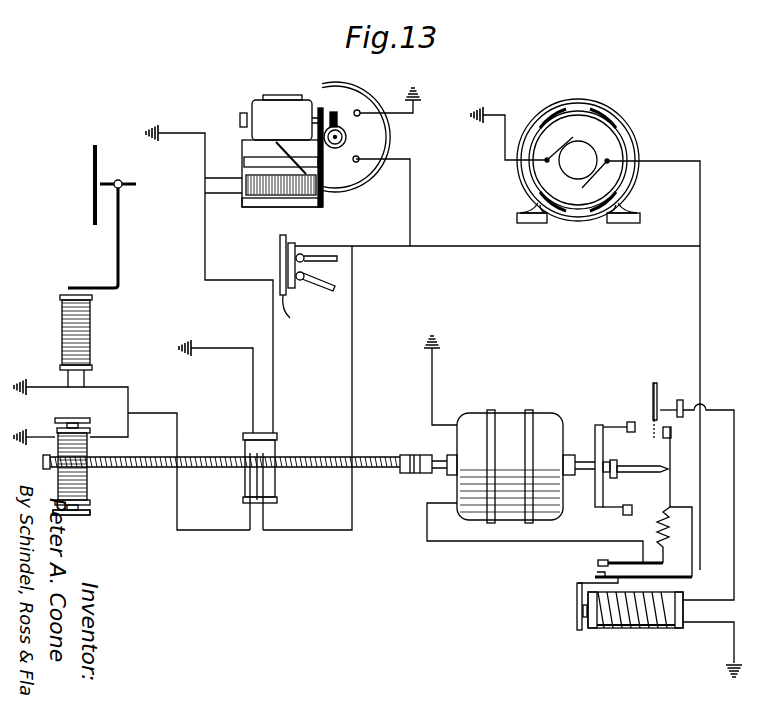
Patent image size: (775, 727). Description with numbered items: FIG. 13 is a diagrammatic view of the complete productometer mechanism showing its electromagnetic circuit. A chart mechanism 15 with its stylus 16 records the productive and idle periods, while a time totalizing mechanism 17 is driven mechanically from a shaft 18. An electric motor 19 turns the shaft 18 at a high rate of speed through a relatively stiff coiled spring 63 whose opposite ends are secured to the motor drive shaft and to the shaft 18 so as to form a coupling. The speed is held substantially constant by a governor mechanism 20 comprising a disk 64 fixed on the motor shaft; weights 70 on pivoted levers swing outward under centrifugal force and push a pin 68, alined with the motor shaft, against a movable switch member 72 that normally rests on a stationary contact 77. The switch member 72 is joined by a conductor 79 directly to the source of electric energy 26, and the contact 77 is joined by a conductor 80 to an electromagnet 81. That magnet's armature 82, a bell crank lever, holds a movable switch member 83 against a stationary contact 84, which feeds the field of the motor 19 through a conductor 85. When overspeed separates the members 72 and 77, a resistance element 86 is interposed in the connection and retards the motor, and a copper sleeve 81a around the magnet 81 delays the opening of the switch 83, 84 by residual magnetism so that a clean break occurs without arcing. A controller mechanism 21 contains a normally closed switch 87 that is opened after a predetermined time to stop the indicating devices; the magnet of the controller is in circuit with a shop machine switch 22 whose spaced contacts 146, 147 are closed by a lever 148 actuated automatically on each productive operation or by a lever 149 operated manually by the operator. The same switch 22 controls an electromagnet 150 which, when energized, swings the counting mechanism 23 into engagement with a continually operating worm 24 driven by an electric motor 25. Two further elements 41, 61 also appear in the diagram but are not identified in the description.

The chart mechanism 15 is at (94, 183).
The stylus 16 is at (124, 185).
The time totalizing mechanism 17 is at (54, 510).
The shaft 18 is at (160, 468).
The electric motor 19 is at (505, 410).
The governor mechanism 20 is at (619, 413).
The controller mechanism 21 is at (266, 482).
The switch 22 is at (298, 313).
The counting mechanism 23 is at (258, 104).
The drive shaft 24 is at (344, 136).
The electric motor 25 is at (352, 84).
The source of electric energy 26 is at (639, 136).
The solenoid coil 41 is at (92, 320).
The solenoid coil 61 is at (88, 485).
The coiled spring 63 is at (418, 474).
The disk 64 is at (596, 506).
The pin 68 is at (630, 456).
The weights 70 is at (627, 516).
The movable switch member 72 is at (678, 408).
The stationary contact 77 is at (654, 395).
The conductor 79 is at (672, 497).
The conductor 80 is at (716, 410).
The electromagnet 81 is at (655, 630).
The copper sleeve 81a is at (608, 628).
The armature 82 is at (577, 610).
The movable switch member 83 is at (596, 578).
The stationary contact 84 is at (598, 564).
The conductor 85 is at (500, 542).
The resistance element 86 is at (665, 545).
The switch 87 is at (274, 435).
The contact 146 is at (279, 262).
The contact 147 is at (296, 250).
The lever 148 is at (338, 259).
The lever 149 is at (326, 289).
The electromagnet 150 is at (282, 200).